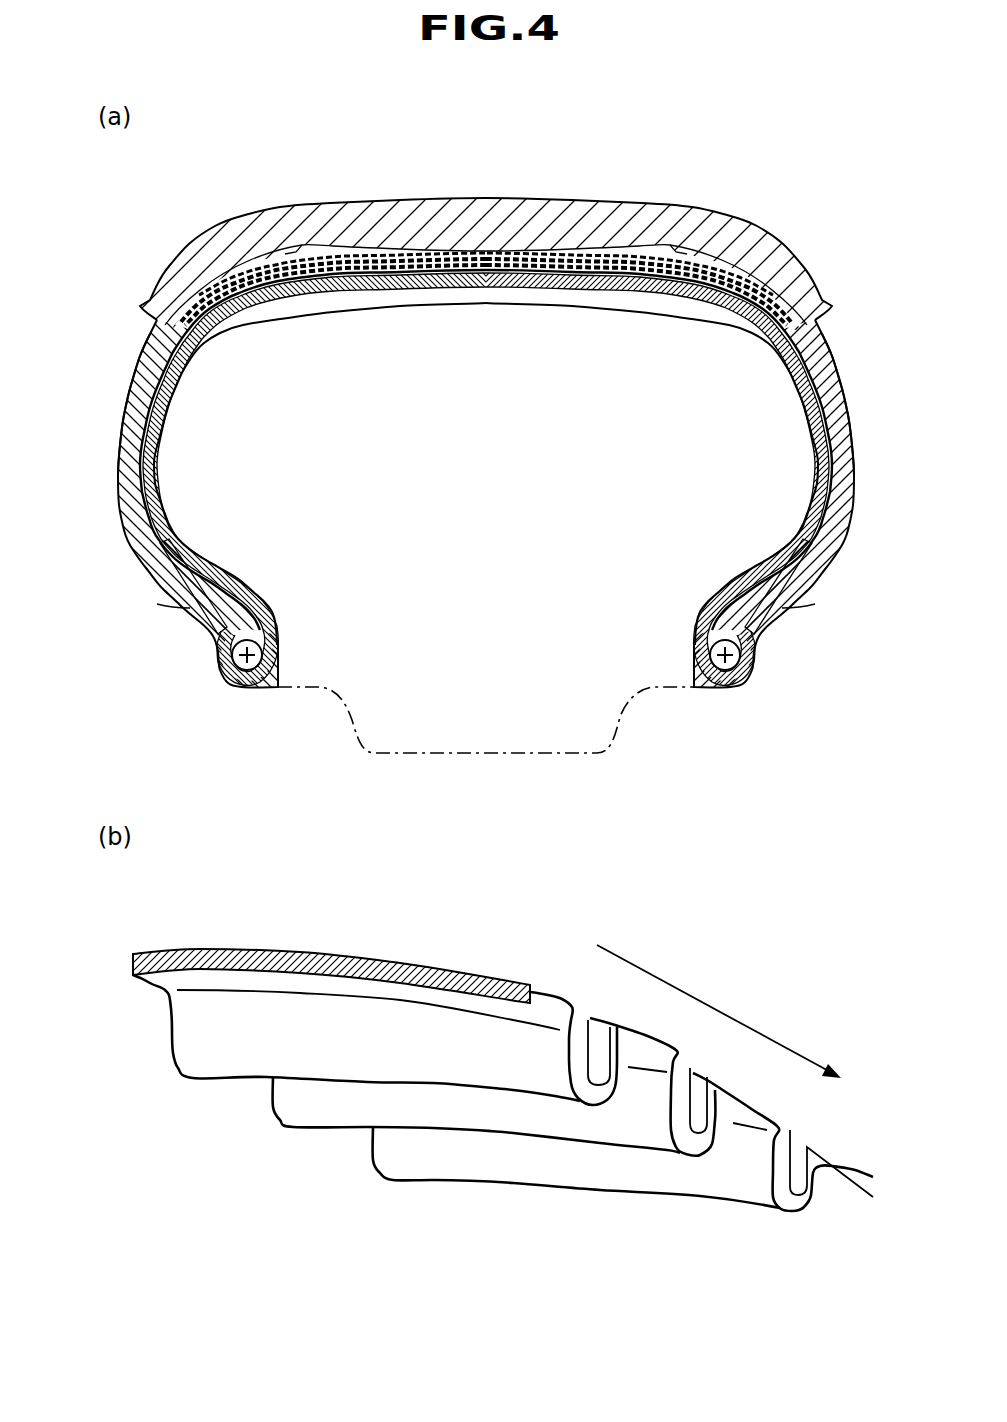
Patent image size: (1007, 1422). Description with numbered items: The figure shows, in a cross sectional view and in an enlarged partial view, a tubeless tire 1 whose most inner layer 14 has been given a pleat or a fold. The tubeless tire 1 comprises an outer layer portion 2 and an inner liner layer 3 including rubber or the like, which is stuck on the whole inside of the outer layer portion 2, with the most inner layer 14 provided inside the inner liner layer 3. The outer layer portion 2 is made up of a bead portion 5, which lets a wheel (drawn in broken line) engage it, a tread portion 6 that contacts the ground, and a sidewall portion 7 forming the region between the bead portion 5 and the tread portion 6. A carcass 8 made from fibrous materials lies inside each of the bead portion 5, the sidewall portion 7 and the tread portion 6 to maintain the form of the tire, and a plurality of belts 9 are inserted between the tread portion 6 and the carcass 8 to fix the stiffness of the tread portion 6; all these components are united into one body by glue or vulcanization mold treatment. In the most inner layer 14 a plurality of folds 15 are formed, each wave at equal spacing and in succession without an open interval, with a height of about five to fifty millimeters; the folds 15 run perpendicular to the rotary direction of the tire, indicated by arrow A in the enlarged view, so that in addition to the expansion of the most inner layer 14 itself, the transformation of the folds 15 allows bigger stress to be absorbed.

The tubeless tire 1 is at (119, 365).
The outer layer portion 2 is at (853, 365).
The inner liner layer 3 is at (686, 650).
The bead portion 5 is at (220, 672).
The tread portion 6 is at (487, 200).
The sidewall portion 7 is at (125, 452).
The carcass 8 is at (221, 629).
The belts 9 is at (413, 248).
The most inner layer 14 is at (810, 452).
The folds 15 is at (492, 296).
The direction A is at (704, 1004).